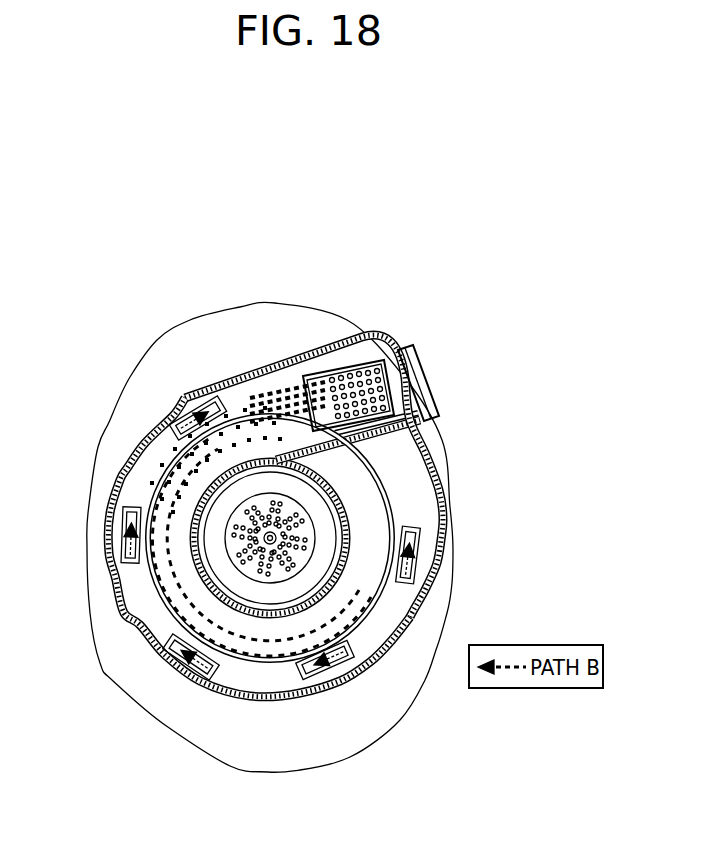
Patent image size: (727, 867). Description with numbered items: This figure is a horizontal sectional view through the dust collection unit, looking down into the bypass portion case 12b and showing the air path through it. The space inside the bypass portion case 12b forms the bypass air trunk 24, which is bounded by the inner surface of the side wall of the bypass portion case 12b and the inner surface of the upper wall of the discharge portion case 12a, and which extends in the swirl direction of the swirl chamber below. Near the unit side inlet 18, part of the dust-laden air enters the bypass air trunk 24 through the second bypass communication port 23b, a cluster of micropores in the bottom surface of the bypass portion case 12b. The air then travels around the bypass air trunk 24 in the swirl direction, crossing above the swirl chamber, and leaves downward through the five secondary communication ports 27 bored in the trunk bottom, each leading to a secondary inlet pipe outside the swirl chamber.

The discharge portion case 12a is at (440, 470).
The bypass portion case 12b is at (393, 637).
The unit side inlet 18 is at (431, 392).
The second bypass communication port 23b is at (363, 363).
The bypass air trunk 24 is at (247, 668).
The secondary communication port 27 is at (190, 400).